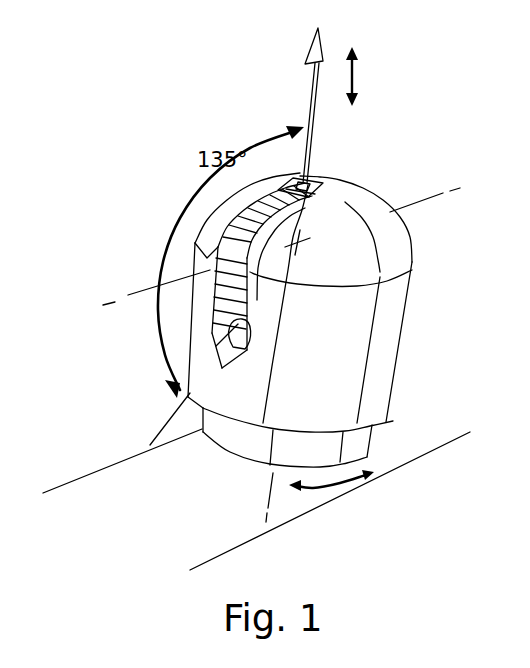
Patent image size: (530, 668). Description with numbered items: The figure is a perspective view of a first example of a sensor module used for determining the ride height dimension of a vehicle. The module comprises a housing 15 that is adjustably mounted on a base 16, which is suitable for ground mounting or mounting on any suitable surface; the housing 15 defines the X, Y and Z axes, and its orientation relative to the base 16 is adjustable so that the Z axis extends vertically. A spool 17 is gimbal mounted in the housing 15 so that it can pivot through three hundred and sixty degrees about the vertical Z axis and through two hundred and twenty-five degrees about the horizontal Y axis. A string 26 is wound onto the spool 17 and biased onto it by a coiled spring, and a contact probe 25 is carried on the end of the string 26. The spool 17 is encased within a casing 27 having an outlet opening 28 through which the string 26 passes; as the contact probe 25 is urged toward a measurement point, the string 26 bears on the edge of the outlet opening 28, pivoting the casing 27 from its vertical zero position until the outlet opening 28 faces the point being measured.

The housing 15 is at (363, 332).
The base 16 is at (325, 447).
The spool 17 is at (210, 212).
The contact probe 25 is at (313, 40).
The string 26 is at (307, 92).
The casing 27 is at (300, 182).
The outlet opening 28 is at (313, 185).